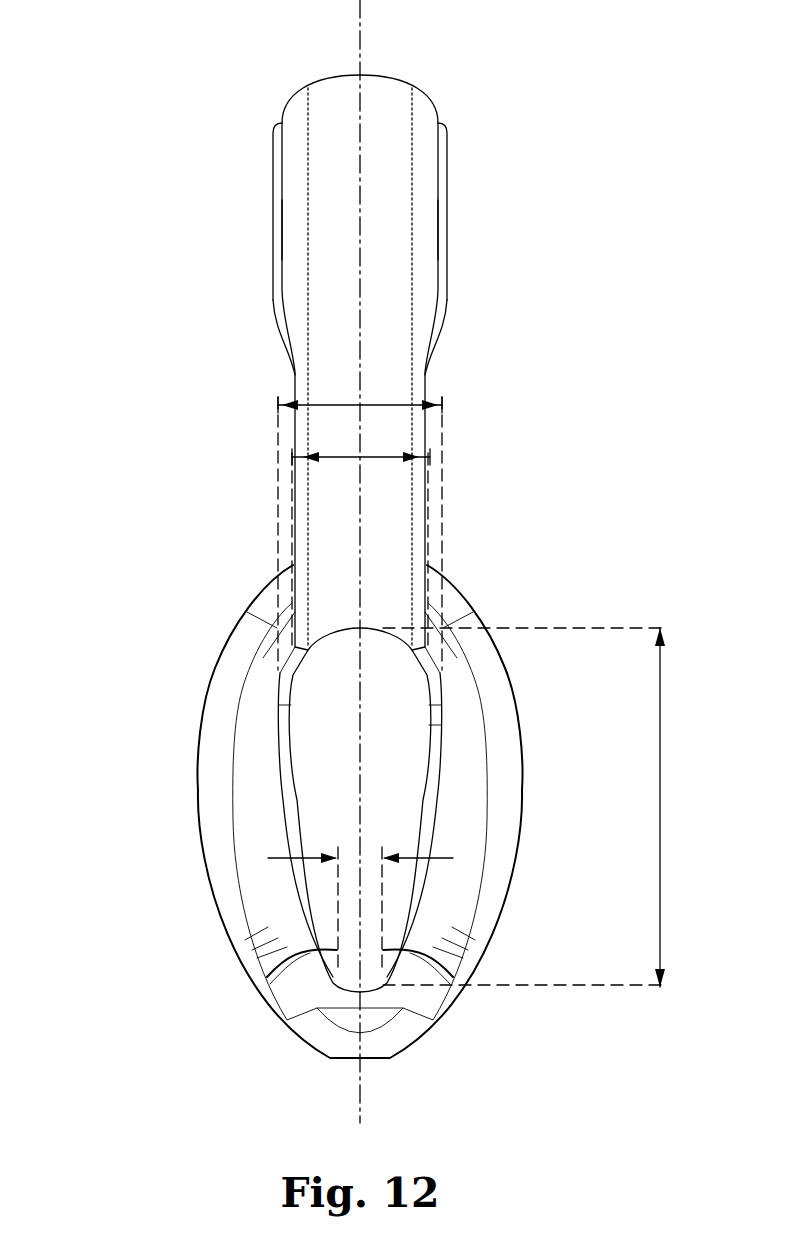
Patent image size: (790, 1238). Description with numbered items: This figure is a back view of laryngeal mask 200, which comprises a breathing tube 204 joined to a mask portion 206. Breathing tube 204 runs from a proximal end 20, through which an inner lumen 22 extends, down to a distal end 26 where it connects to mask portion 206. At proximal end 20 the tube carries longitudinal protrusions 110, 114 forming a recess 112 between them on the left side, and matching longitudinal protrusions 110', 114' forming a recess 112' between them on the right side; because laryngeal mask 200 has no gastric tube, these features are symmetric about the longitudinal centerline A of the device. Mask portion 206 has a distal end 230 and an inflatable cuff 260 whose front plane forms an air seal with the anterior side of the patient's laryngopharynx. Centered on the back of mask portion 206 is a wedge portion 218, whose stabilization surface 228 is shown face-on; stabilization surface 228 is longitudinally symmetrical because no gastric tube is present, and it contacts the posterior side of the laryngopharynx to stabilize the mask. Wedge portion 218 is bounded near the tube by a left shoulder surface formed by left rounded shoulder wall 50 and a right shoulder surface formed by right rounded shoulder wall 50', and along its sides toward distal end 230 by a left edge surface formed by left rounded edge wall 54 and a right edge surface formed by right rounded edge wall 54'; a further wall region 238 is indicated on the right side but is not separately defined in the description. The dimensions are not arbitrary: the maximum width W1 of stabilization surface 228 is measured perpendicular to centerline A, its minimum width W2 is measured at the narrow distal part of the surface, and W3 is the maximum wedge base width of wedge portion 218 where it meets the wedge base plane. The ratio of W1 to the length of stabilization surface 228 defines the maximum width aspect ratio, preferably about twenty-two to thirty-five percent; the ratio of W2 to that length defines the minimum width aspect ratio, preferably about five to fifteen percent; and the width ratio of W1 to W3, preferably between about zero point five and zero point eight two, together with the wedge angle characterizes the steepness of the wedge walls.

The proximal end 20 is at (398, 102).
The inner lumen 22 is at (388, 76).
The longitudinal protrusion 110 is at (249, 211).
The longitudinal protrusion 110' is at (474, 211).
The recess 112 is at (240, 229).
The recess 112' is at (483, 229).
The longitudinal protrusion 114 is at (247, 314).
The longitudinal protrusion 114' is at (477, 314).
The laryngeal mask 200 is at (113, 354).
The breathing tube 204 is at (298, 514).
The mask portion 206 is at (111, 680).
The distal end 26 is at (353, 582).
The left rounded shoulder wall 50 is at (226, 656).
The right rounded shoulder wall 50' is at (488, 671).
The inflatable cuff 260 is at (224, 749).
The channel wall 238 is at (443, 725).
The stabilization surface 228 is at (433, 810).
The left rounded edge wall 54 is at (233, 825).
The right rounded edge wall 54' is at (490, 825).
The wedge portion 218 is at (286, 885).
The distal end 230 is at (267, 977).
The maximum width W1 is at (361, 445).
The minimum width W2 is at (360, 896).
The maximum wedge base width W3 is at (360, 393).
The axis A is at (360, 1139).